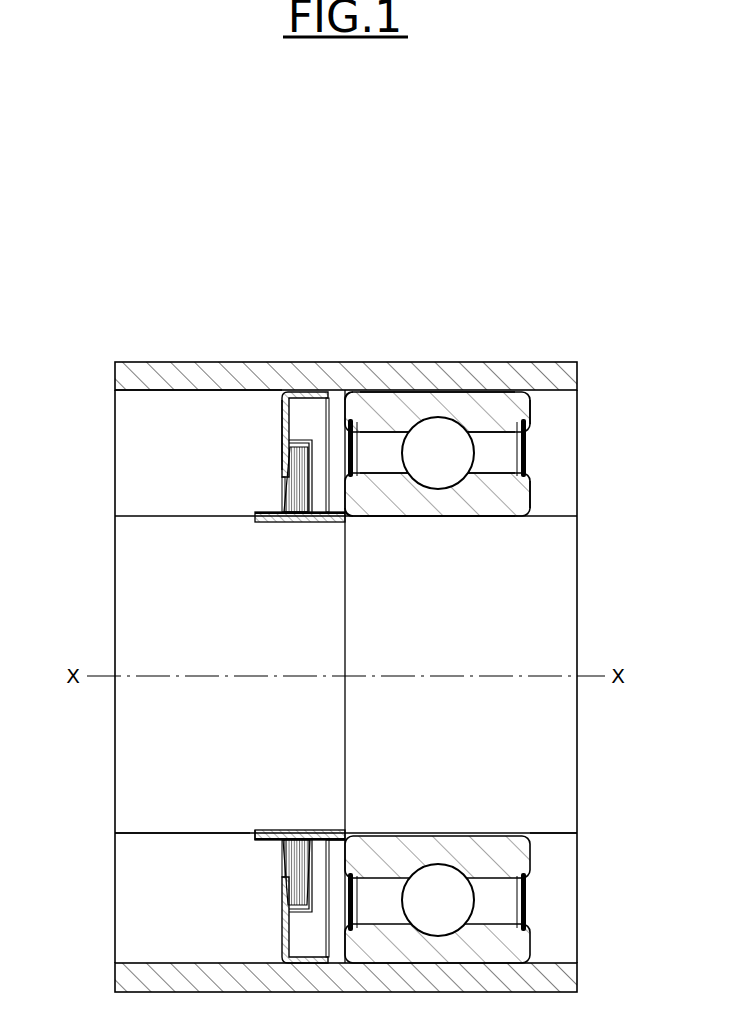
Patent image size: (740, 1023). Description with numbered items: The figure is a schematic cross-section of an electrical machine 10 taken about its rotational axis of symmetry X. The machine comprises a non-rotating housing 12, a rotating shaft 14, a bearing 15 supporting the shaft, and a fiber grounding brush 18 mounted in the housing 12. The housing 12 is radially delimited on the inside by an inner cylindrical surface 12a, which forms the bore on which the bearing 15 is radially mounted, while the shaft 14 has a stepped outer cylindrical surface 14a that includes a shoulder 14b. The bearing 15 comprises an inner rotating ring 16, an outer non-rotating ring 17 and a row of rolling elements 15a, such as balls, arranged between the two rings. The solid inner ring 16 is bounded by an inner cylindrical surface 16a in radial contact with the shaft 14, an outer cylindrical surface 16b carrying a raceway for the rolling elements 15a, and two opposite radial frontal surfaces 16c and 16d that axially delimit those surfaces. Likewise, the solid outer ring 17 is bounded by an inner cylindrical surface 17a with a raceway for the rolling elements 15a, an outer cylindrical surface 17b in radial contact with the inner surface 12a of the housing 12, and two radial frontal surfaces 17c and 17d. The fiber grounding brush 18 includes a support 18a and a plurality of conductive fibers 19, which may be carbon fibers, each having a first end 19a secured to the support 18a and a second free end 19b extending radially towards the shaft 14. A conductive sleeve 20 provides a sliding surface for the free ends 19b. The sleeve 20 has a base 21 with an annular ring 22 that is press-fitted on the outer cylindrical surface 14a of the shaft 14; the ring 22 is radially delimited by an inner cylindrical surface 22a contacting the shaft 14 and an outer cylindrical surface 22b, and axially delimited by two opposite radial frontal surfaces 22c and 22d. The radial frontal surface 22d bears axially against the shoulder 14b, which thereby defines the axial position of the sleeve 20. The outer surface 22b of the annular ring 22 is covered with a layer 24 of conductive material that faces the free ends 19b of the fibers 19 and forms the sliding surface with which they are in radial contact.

The electrical machine 10 is at (637, 280).
The housing 12 is at (567, 353).
The inner cylindrical surface 12a is at (148, 391).
The rotating shaft 14 is at (571, 590).
The stepped outer cylindrical surface 14a is at (147, 833).
The shoulder 14b is at (553, 836).
The bearing 15 is at (567, 449).
The rolling elements 15a is at (438, 453).
The inner rotating ring 16 is at (505, 505).
The inner cylindrical surface 16a is at (450, 517).
The outer cylindrical surface 16b is at (535, 462).
The radial frontal surface 16c is at (347, 512).
The radial frontal surface 16d is at (535, 490).
The outer non-rotating ring 17 is at (483, 403).
The inner cylindrical surface 17a is at (533, 440).
The outer cylindrical surface 17b is at (425, 390).
The radial frontal surface 17c is at (343, 404).
The radial frontal surface 17d is at (535, 410).
The fiber grounding brush 18 is at (264, 443).
The support 18a is at (283, 417).
The conductive fibers 19 is at (297, 483).
The first end 19a is at (297, 453).
The second free end 19b is at (287, 507).
The conductive sleeve 20 is at (240, 534).
The base 21 is at (356, 828).
The annular ring 22 is at (321, 834).
The inner cylindrical surface 22a is at (280, 830).
The outer cylindrical surface 22b is at (276, 841).
The radial frontal surface 22c is at (243, 831).
The radial frontal surface 22d is at (357, 834).
The conductive layer 24 is at (318, 523).